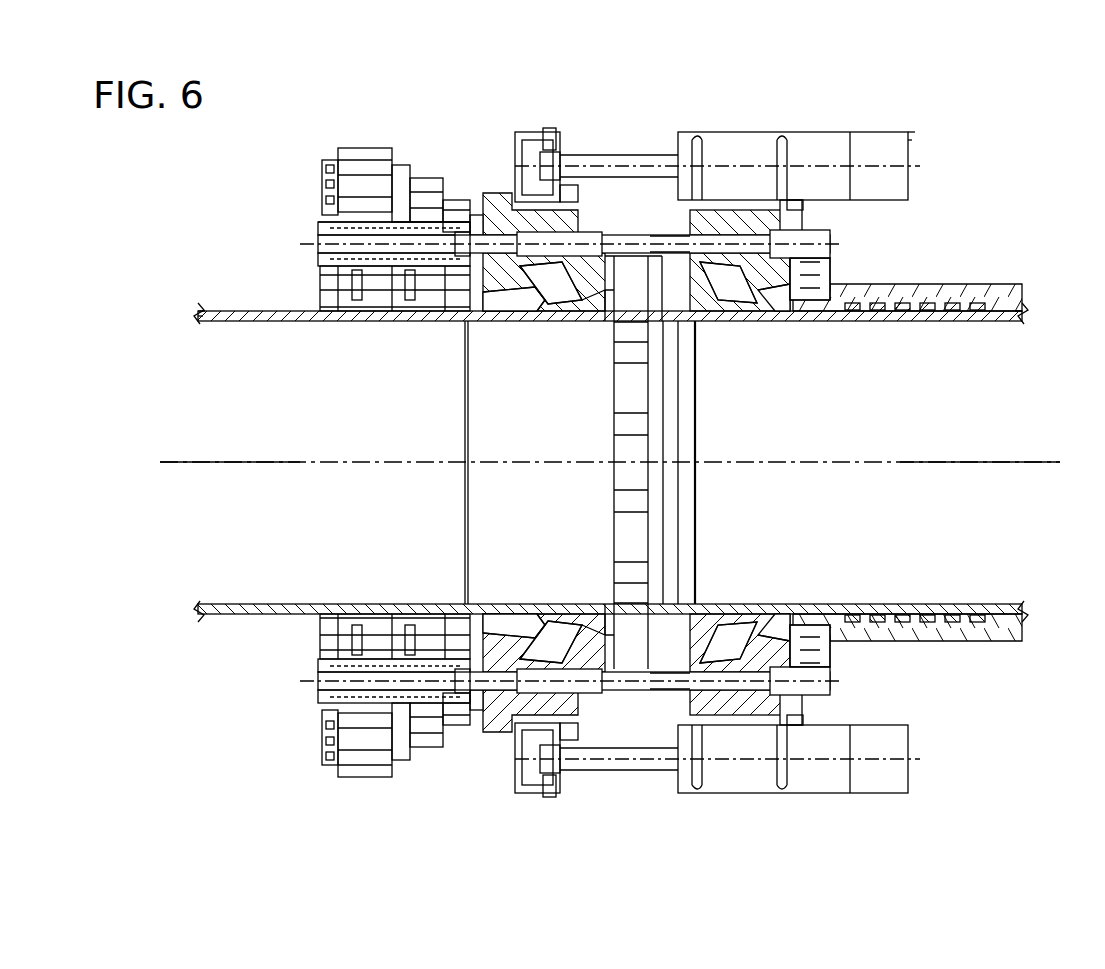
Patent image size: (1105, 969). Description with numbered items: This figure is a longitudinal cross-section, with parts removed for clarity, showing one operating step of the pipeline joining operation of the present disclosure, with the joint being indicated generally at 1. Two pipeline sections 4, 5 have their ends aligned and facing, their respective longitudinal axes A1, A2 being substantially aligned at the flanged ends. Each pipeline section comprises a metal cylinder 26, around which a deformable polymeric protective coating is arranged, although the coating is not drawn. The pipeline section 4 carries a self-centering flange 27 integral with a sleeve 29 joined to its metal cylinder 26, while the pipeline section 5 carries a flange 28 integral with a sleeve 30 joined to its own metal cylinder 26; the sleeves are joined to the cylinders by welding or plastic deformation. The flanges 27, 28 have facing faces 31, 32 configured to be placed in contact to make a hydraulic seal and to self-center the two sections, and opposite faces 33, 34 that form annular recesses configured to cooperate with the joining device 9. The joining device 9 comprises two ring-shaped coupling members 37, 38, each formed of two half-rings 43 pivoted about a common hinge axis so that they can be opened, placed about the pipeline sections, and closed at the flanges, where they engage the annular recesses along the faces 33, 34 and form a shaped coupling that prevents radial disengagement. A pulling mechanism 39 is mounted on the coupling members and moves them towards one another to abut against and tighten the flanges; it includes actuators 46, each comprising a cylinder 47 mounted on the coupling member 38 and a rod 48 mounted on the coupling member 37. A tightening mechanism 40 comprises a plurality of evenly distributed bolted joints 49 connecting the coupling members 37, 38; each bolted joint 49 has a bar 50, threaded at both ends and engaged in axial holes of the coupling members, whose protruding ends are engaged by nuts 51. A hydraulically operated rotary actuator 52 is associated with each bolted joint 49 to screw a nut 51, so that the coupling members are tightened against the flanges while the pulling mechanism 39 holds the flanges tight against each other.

The wind turbine 1 is at (112, 358).
The pipeline section 4 is at (212, 282).
The pipeline section 5 is at (1048, 250).
The joining device 9 is at (955, 118).
The metal cylinder 26 is at (258, 322).
The flange 27 is at (588, 300).
The flange 28 is at (678, 330).
The sleeve 29 is at (540, 322).
The sleeve 30 is at (950, 298).
The face 31 is at (618, 292).
The face 32 is at (640, 275).
The face 33 is at (548, 300).
The face 34 is at (700, 300).
The coupling member 37 is at (490, 303).
The coupling member 38 is at (765, 300).
The pulling mechanism 39 is at (942, 143).
The tightening mechanism 40 is at (447, 138).
The half-ring 43 is at (512, 215).
The actuator 46 is at (851, 134).
The cylinder 47 is at (764, 146).
The rod 48 is at (576, 158).
The bolted joint 49 is at (845, 240).
The bar 50 is at (672, 240).
The nut 51 is at (458, 222).
The actuator 52 is at (297, 215).
The longitudinal axis A1 is at (176, 460).
The longitudinal axis A2 is at (1022, 458).